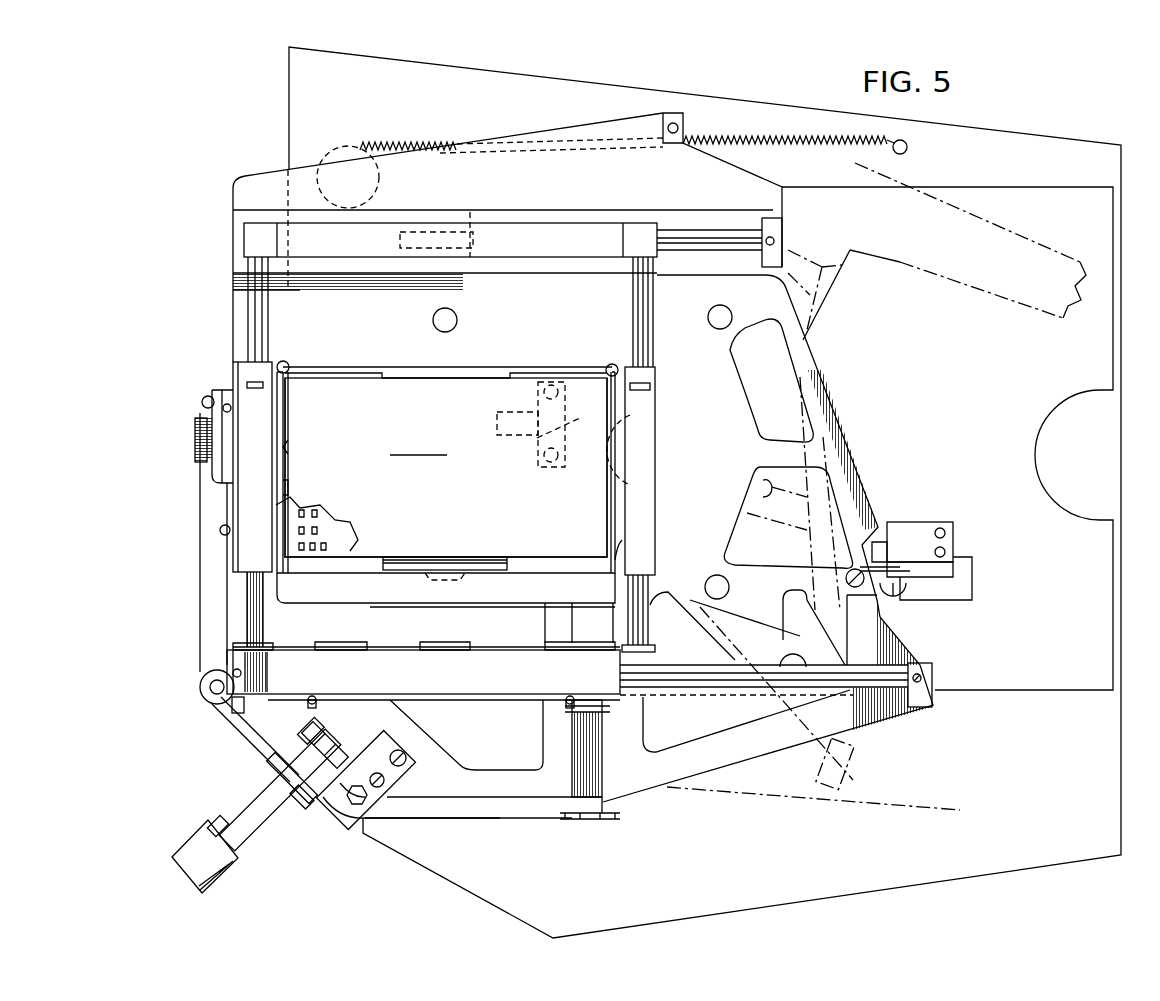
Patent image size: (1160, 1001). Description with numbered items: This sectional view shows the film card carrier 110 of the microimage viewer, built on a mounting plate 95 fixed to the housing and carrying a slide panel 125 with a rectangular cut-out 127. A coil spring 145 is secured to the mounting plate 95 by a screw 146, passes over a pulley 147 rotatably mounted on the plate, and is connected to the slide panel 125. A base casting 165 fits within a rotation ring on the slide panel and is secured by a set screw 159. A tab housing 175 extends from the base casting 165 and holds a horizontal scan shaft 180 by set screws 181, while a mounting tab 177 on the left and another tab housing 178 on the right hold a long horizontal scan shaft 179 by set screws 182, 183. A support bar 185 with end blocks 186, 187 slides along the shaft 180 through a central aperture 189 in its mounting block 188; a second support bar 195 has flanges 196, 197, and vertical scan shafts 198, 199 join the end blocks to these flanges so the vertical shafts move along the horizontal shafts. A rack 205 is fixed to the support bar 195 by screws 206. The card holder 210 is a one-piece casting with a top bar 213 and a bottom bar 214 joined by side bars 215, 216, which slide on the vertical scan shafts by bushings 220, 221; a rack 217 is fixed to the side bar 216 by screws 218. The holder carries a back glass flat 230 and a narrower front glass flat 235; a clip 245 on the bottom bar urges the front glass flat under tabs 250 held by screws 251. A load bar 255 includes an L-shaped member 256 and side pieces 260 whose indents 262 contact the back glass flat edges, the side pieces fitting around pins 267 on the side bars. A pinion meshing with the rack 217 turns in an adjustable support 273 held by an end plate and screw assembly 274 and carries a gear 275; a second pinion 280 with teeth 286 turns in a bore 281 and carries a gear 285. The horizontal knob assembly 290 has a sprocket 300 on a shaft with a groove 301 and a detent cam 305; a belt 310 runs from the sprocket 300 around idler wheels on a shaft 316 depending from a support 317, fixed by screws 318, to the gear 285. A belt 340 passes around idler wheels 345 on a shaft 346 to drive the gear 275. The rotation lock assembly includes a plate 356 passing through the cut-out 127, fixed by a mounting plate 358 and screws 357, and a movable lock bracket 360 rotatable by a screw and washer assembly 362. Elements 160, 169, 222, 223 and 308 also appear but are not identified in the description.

The mounting plate 95 is at (1105, 160).
The film card carrier 110 is at (205, 250).
The slide panel 125 is at (1056, 188).
The rectangular cut-out 127 is at (968, 562).
The coil spring 145 is at (813, 140).
The screw 146 is at (906, 149).
The pulley 147 is at (340, 158).
The set screw 159 is at (766, 490).
The cam slot 160 is at (744, 532).
The base casting 165 is at (696, 530).
The cartridge hub 169 is at (540, 440).
The tab housing 175 is at (799, 235).
The mounting tab 177 is at (240, 720).
The tab housing 178 is at (933, 685).
The long horizontal scan shaft 179 is at (898, 712).
The horizontal scan shaft 180 is at (718, 235).
The set screws 181 is at (773, 241).
The set screw 182 is at (950, 673).
The set screw 183 is at (232, 669).
The support bar 185 is at (450, 218).
The end block 186 is at (635, 238).
The end block 187 is at (265, 240).
The mounting block 188 is at (437, 225).
The central aperture 189 is at (468, 232).
The support bar 195 is at (423, 671).
The flange 196 is at (650, 660).
The flange 197 is at (270, 662).
The vertical scan shaft 198 is at (640, 320).
The vertical scan shaft 199 is at (262, 316).
The rack 205 is at (448, 700).
The screws 206 is at (568, 698).
The card holder 210 is at (453, 477).
The top bar 213 is at (476, 368).
The bottom bar 214 is at (547, 568).
The side bar 215 is at (669, 471).
The side bar 216 is at (227, 462).
The rack 217 is at (186, 468).
The screws 218 is at (223, 532).
The bushing 220 is at (650, 389).
The bushing 221 is at (262, 395).
The guide 222 is at (622, 540).
The contact pad 223 is at (278, 505).
The back glass flat 230 is at (290, 391).
The front glass flat 235 is at (446, 467).
The clip 245 is at (448, 556).
The tabs 250 is at (290, 364).
The screws 251 is at (619, 352).
The load bar 255 is at (430, 614).
The L-shaped member 256 is at (331, 598).
The side pieces 260 is at (284, 487).
The indent 262 is at (288, 446).
The pin 267 is at (612, 413).
The adjustable support 273 is at (215, 395).
The end plate and screw assembly 274 is at (205, 403).
The gear 275 is at (195, 425).
The pinion 280 is at (606, 805).
The bore 281 is at (624, 786).
The gear 285 is at (598, 820).
The teeth 286 is at (612, 708).
The horizontal knob assembly 290 is at (226, 881).
The sprocket 300 is at (272, 780).
The groove 301 is at (231, 851).
The detent cam 305 is at (306, 733).
The nut 308 is at (286, 805).
The belt 310 is at (470, 820).
The shaft 316 is at (370, 815).
The support 317 is at (388, 768).
The screws 318 is at (402, 750).
The belt 340 is at (200, 578).
The idler wheels 345 is at (184, 686).
The shaft 346 is at (212, 692).
The plate 356 is at (958, 540).
The screws 357 is at (940, 528).
The mounting plate 358 is at (922, 523).
The movable lock bracket 360 is at (930, 522).
The screw and washer assembly 362 is at (893, 597).